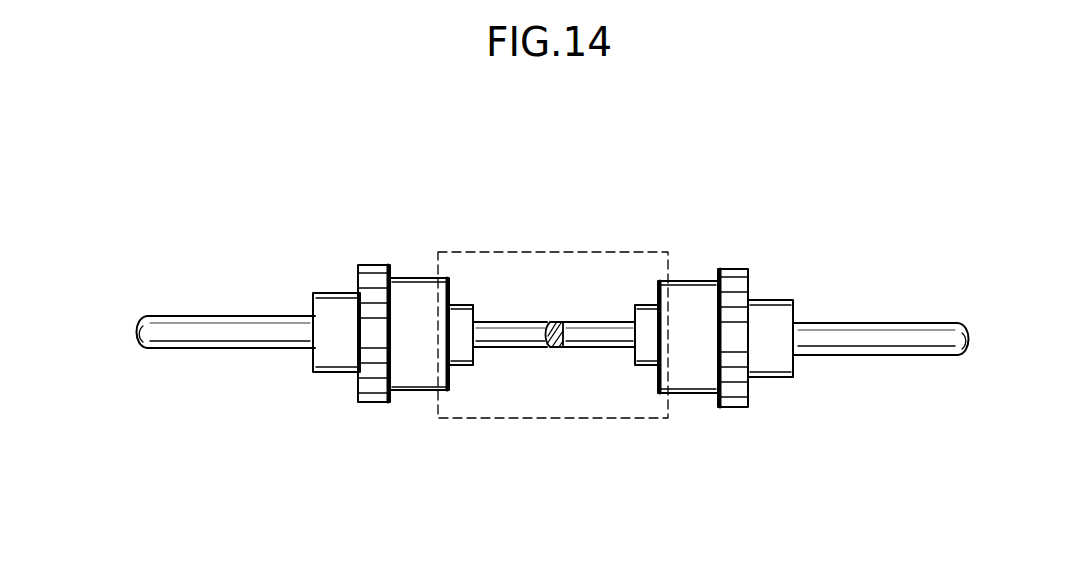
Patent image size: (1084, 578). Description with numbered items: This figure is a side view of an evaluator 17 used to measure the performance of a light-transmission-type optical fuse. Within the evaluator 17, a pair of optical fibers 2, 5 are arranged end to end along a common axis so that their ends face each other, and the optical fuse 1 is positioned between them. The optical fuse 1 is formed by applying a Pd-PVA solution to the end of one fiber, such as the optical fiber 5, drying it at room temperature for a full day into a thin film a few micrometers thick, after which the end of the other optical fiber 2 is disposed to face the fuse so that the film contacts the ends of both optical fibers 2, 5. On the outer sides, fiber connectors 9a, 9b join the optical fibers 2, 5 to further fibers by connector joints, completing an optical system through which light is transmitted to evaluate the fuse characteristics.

The evaluator 17 is at (403, 215).
The optical fuse 1 is at (550, 322).
The optical fiber 5 is at (508, 342).
The optical fiber 2 is at (607, 343).
The fiber connector 9a is at (721, 436).
The fiber connector 9b is at (368, 430).